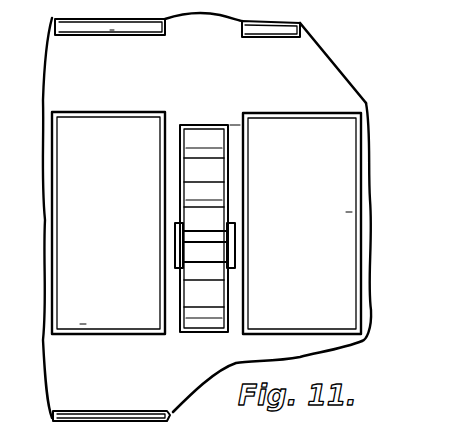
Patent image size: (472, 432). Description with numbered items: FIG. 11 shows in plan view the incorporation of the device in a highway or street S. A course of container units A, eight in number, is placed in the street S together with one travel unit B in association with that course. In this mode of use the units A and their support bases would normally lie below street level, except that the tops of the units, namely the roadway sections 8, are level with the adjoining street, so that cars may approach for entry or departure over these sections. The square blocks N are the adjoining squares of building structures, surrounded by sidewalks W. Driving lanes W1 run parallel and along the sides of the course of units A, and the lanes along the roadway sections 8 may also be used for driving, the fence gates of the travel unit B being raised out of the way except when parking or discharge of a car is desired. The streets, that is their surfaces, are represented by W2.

The roadway section 8 is at (197, 139).
The sidewalk W is at (72, 35).
The driving lane W1 is at (290, 167).
The street W2 is at (336, 90).
The building square N is at (113, 29).
The highway or street S is at (236, 128).
The container unit A is at (210, 148).
The travel unit B is at (231, 247).